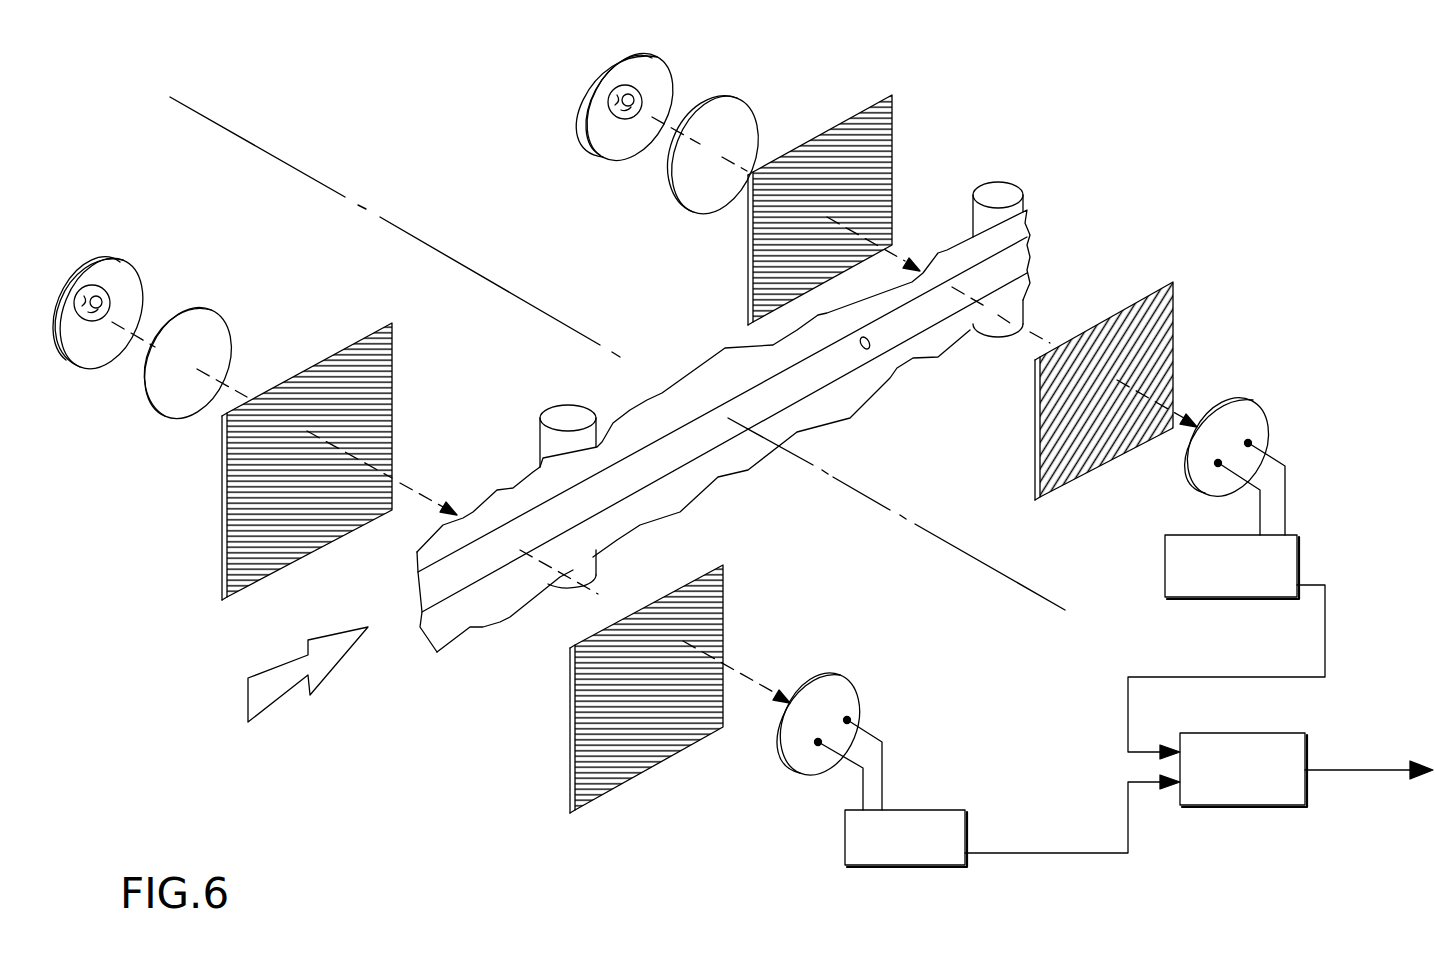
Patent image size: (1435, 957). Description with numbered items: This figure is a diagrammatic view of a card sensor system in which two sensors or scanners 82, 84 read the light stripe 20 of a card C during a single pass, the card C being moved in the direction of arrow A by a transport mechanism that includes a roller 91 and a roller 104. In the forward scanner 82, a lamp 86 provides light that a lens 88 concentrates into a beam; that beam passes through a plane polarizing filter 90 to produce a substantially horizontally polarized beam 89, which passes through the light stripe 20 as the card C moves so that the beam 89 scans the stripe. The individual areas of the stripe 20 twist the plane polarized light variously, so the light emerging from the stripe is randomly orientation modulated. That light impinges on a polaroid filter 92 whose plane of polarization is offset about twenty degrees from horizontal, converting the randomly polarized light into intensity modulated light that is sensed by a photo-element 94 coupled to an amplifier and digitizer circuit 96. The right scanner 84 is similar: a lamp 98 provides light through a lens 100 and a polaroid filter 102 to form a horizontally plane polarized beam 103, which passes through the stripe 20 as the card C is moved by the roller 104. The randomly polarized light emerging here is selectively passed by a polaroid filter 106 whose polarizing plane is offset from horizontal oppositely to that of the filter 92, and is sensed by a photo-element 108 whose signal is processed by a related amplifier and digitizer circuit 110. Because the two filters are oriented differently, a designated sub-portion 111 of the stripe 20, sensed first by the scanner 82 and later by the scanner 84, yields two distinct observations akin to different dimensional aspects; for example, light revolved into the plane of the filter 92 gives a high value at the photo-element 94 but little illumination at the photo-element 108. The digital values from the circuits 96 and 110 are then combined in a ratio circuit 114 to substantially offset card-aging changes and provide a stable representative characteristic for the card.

The light stripe 20 is at (1015, 248).
The card C is at (1023, 281).
The scanner 82 is at (121, 372).
The scanner 84 is at (737, 78).
The lamp 86 is at (123, 262).
The lens 88 is at (217, 315).
The polarized beam 89 is at (408, 483).
The plane polarizing filter 90 is at (393, 397).
The roller 91 is at (598, 562).
The polaroid filter 92 is at (568, 770).
The photo-element 94 is at (852, 703).
The amplifier and digitizer circuit 96 is at (843, 845).
The lamp 98 is at (657, 57).
The lens 100 is at (677, 190).
The polaroid filter 102 is at (893, 153).
The polarized beam 103 is at (905, 262).
The roller 104 is at (1002, 330).
The polaroid filter 106 is at (1173, 346).
The photo-element 108 is at (1185, 482).
The amplifier and digitizer circuit 110 is at (1165, 560).
The sub-portion 111 is at (872, 350).
The ratio circuit 114 is at (1243, 733).
The arrow A is at (267, 695).